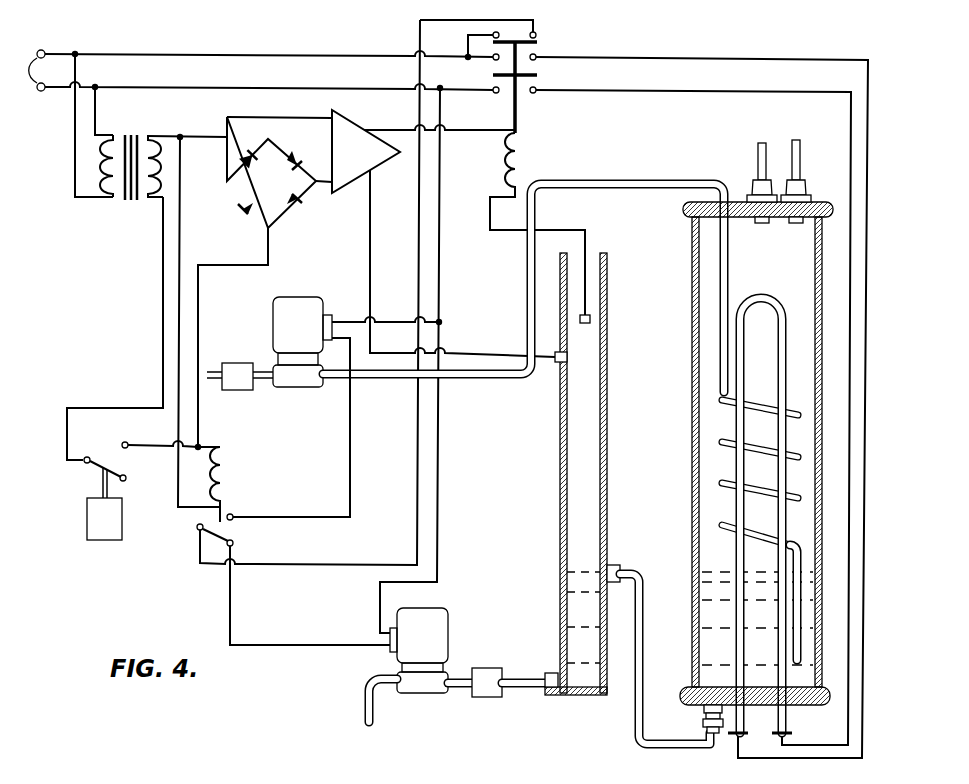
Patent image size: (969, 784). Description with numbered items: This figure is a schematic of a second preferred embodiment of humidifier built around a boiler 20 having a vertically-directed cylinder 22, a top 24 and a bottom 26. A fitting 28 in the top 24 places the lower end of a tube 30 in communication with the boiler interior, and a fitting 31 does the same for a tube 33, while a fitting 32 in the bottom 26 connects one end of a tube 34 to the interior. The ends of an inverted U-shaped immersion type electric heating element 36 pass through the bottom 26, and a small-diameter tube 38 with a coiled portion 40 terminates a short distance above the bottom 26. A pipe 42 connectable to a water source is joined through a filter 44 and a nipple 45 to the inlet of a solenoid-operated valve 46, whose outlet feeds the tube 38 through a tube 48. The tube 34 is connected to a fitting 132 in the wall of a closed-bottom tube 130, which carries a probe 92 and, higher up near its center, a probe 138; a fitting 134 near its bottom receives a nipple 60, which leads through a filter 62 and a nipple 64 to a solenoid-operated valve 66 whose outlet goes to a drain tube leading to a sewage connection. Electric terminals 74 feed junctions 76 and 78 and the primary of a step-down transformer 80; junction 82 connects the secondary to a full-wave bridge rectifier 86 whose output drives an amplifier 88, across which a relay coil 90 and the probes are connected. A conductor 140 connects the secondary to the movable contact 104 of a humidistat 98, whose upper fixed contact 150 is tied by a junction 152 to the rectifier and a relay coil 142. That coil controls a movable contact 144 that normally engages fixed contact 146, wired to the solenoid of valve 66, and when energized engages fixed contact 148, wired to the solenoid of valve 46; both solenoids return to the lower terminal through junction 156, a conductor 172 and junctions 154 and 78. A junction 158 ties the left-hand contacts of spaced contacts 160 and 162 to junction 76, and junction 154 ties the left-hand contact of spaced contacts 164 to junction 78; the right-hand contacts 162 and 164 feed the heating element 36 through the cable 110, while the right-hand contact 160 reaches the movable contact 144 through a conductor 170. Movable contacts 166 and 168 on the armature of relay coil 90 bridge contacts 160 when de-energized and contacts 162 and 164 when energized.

The boiler 20 is at (684, 414).
The cylinder 22 is at (690, 362).
The top 24 is at (815, 200).
The bottom 26 is at (808, 705).
The fitting 28 is at (760, 224).
The tube 30 is at (756, 150).
The fitting 31 is at (796, 224).
The fitting 32 is at (700, 714).
The tube 33 is at (797, 140).
The tube 34 is at (660, 750).
The immersion type electric heating element 36 is at (780, 286).
The small-diameter tube 38 is at (718, 268).
The coiled portion 40 is at (720, 440).
The pipe 42 is at (210, 370).
The filter 44 is at (240, 392).
The nipple 45 is at (263, 382).
The solenoid-operated valve 46 is at (308, 388).
The tube 48 is at (626, 182).
The nipple 60 is at (512, 676).
The filter 62 is at (486, 698).
The nipple 64 is at (456, 676).
The solenoid-operated valve 66 is at (424, 695).
The electric terminals 74 is at (40, 90).
The junction 76 is at (78, 50).
The junction 78 is at (97, 86).
The step-down transformer 80 is at (128, 205).
The junction 82 is at (186, 112).
The full-wave bridge rectifier 86 is at (272, 232).
The amplifier 88 is at (350, 130).
The relay coil 90 is at (525, 162).
The level-sensing probe 92 is at (556, 364).
The humidistat 98 is at (90, 542).
The movable contact 104 is at (88, 470).
The cable 110 is at (736, 88).
The tube 130 is at (558, 500).
The fitting 132 is at (612, 563).
The fitting 134 is at (548, 698).
The probe 138 is at (592, 319).
The conductor 140 is at (94, 406).
The relay coil 142 is at (228, 480).
The movable contact 144 is at (197, 527).
The fixed contact 146 is at (234, 545).
The fixed contact 148 is at (234, 514).
The upper fixed contact 150 is at (135, 434).
The junction 152 is at (201, 446).
The junction 154 is at (438, 87).
The junction 156 is at (441, 321).
The junction 158 is at (466, 55).
The spaced contacts 160 is at (500, 33).
The spaced contacts 162 is at (560, 72).
The spaced contacts 164 is at (558, 108).
The movable contact 166 is at (537, 36).
The movable contact 168 is at (505, 78).
The conductor 170 is at (417, 182).
The conductor 172 is at (439, 185).